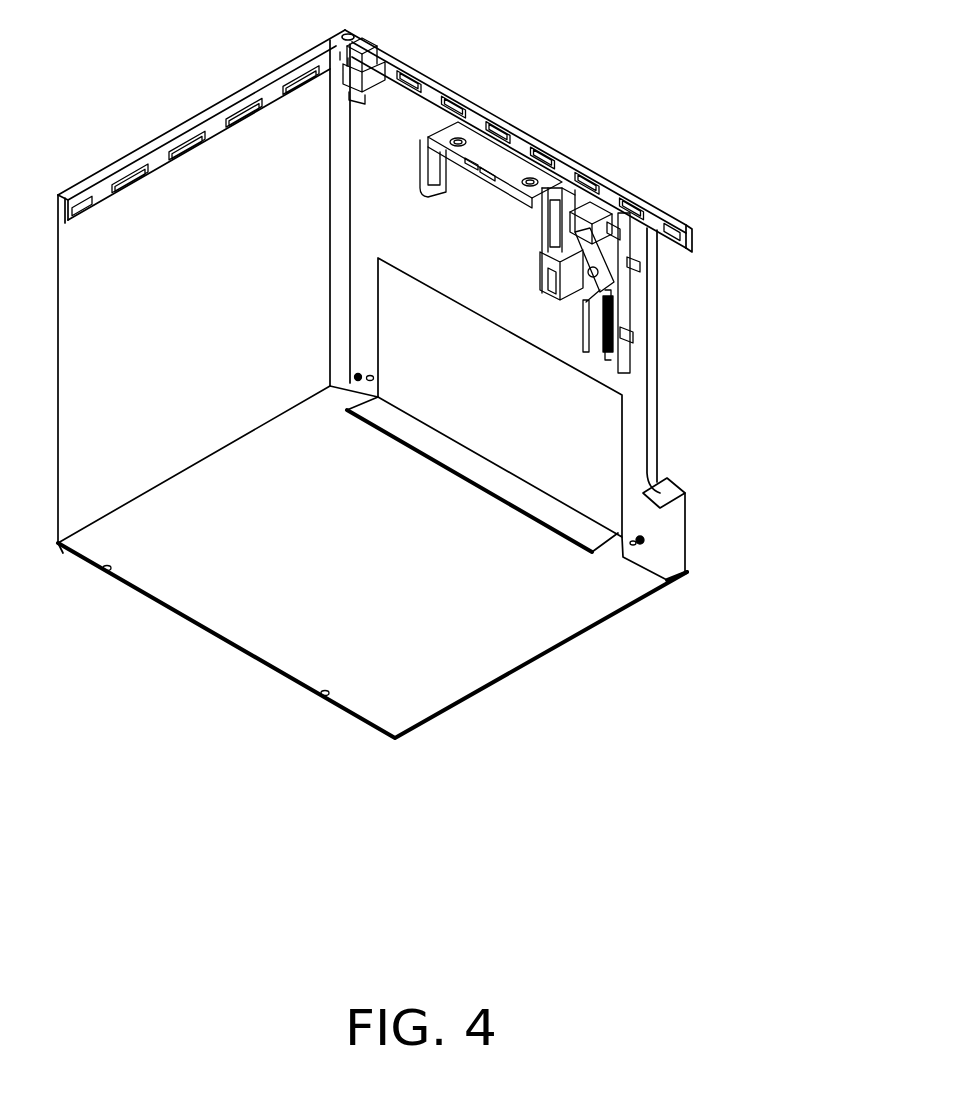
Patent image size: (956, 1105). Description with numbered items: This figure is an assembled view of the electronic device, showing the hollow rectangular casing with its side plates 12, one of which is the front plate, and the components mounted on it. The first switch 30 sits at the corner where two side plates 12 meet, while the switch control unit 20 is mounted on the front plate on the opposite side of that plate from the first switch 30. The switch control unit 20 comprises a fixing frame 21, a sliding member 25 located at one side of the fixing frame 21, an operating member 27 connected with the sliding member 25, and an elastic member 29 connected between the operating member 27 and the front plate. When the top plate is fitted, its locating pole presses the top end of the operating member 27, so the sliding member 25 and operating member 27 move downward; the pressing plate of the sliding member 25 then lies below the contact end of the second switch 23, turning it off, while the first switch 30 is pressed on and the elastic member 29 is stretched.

The side plate 12 is at (632, 425).
The switch control unit 20 is at (647, 63).
The fixing frame 21 is at (515, 172).
The second switch 23 is at (587, 212).
The sliding member 25 is at (610, 250).
The operating member 27 is at (610, 213).
The elastic member 29 is at (613, 315).
The first switch 30 is at (362, 53).